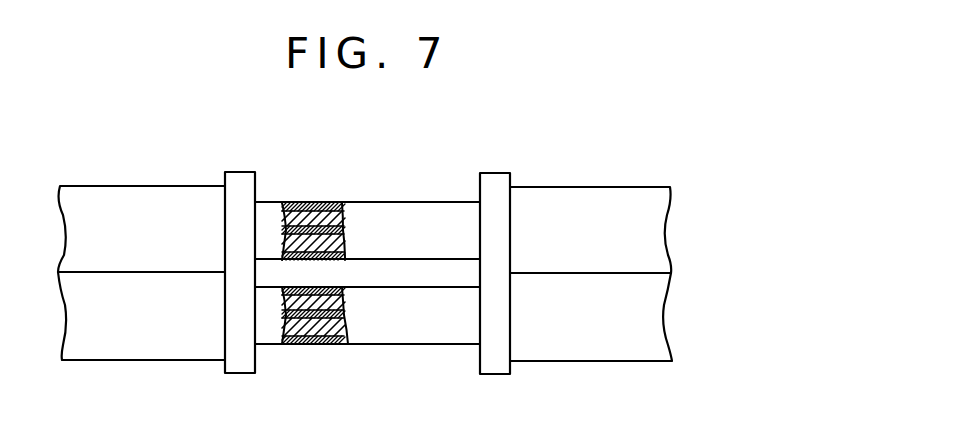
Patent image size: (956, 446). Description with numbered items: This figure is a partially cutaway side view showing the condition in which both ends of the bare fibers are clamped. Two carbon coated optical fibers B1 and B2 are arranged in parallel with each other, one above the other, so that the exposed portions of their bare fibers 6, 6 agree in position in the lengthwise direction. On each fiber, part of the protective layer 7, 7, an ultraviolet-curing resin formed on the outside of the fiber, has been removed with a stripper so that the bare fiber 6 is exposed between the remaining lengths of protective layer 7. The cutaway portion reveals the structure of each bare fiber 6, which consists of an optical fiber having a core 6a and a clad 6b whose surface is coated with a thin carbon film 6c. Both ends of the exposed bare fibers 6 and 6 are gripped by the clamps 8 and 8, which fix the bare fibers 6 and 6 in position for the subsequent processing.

The bare fiber 6 is at (311, 218).
The core 6a is at (324, 240).
The clad 6b is at (308, 202).
The carbon film 6c is at (292, 202).
The protective layer 7 is at (647, 197).
The clamp 8 is at (242, 182).
The carbon coated optical fiber B1 is at (567, 172).
The carbon coated optical fiber B2 is at (555, 367).